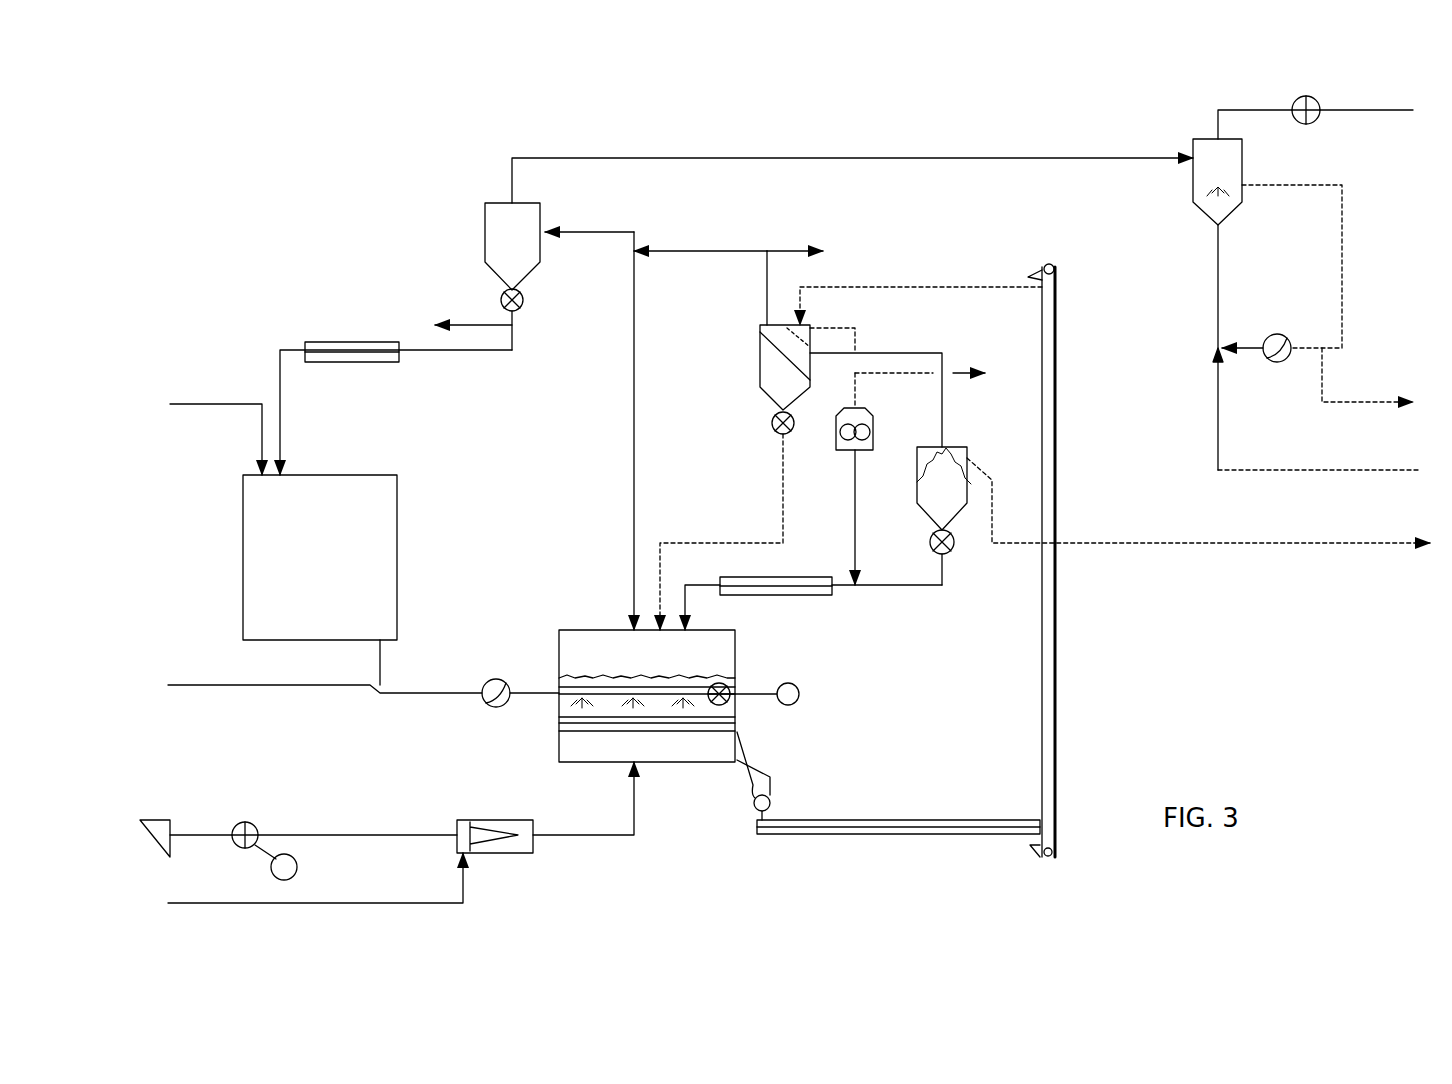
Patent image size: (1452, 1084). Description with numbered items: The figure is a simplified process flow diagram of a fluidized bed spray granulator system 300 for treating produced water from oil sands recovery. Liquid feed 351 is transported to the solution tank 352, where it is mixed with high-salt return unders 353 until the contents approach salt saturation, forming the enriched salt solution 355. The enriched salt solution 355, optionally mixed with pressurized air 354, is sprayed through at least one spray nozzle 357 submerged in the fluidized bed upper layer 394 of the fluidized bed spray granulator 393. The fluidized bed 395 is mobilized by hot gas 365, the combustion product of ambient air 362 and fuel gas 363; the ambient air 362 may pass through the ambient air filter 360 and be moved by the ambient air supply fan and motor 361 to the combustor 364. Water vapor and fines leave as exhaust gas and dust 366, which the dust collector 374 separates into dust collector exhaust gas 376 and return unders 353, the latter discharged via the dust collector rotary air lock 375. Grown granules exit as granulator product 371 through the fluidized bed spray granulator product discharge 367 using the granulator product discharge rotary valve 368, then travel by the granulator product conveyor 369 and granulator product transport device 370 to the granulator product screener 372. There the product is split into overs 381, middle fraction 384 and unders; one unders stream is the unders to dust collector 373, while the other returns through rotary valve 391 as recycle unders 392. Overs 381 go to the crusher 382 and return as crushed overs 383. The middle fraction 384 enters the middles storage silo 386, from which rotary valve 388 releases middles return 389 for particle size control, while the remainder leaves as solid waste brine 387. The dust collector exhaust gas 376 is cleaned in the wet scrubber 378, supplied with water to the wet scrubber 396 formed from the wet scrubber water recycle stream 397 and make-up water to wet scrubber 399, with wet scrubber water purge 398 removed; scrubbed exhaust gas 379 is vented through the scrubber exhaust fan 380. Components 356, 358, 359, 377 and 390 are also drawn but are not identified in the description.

The fluidized bed spray granulator system 300 is at (312, 178).
The liquid feed 351 is at (203, 403).
The solution tank 352 is at (331, 569).
The return unders 353 is at (455, 350).
The pressurized air 354 is at (223, 697).
The enriched salt solution 355 is at (384, 655).
The pump 356 is at (496, 679).
The spray nozzle 357 is at (580, 703).
The valve 358 is at (728, 684).
The sensor 359 is at (800, 690).
The ambient air filter 360 is at (152, 819).
The ambient air supply fan and motor 361 is at (246, 821).
The ambient air 362 is at (391, 835).
The fuel gas 363 is at (209, 903).
The combustor 364 is at (490, 820).
The hot gas 365 is at (622, 835).
The exhaust gas and dust 366 is at (634, 390).
The fluidized bed spray granulator product discharge 367 is at (755, 778).
The granulator product discharge rotary valve 368 is at (754, 808).
The granulator product conveyor 369 is at (958, 835).
The granulator product transport device 370 is at (1057, 348).
The granulator product 371 is at (930, 287).
The granulator product screener 372 is at (760, 362).
The unders to dust collector 373 is at (700, 251).
The dust collector 374 is at (512, 246).
The dust collector rotary air lock 375 is at (500, 297).
The dust collector exhaust gas 376 is at (567, 158).
The pump 377 is at (1273, 333).
The wet scrubber 378 is at (1191, 148).
The scrubbed exhaust gas 379 is at (1240, 110).
The scrubber exhaust fan 380 is at (1314, 96).
The overs 381 is at (841, 323).
The crusher 382 is at (866, 452).
The crushed overs 383 is at (855, 482).
The middle fraction 384 is at (920, 353).
The middles storage silo 386 is at (955, 444).
The solid waste brine 387 is at (982, 472).
The rotary valve 388 is at (952, 552).
The middles return 389 is at (908, 590).
The line 390 is at (690, 585).
The rotary valve 391 is at (772, 420).
The recycle unders 392 is at (782, 470).
The fluidized bed spray granulator 393 is at (718, 663).
The fluidized bed upper layer 394 is at (590, 676).
The fluidized bed 395 is at (602, 705).
The water to the wet scrubber 396 is at (1216, 250).
The wet scrubber water recycle stream 397 is at (1342, 203).
The wet scrubber water purge 398 is at (1371, 402).
The make-up water to wet scrubber 399 is at (1260, 470).